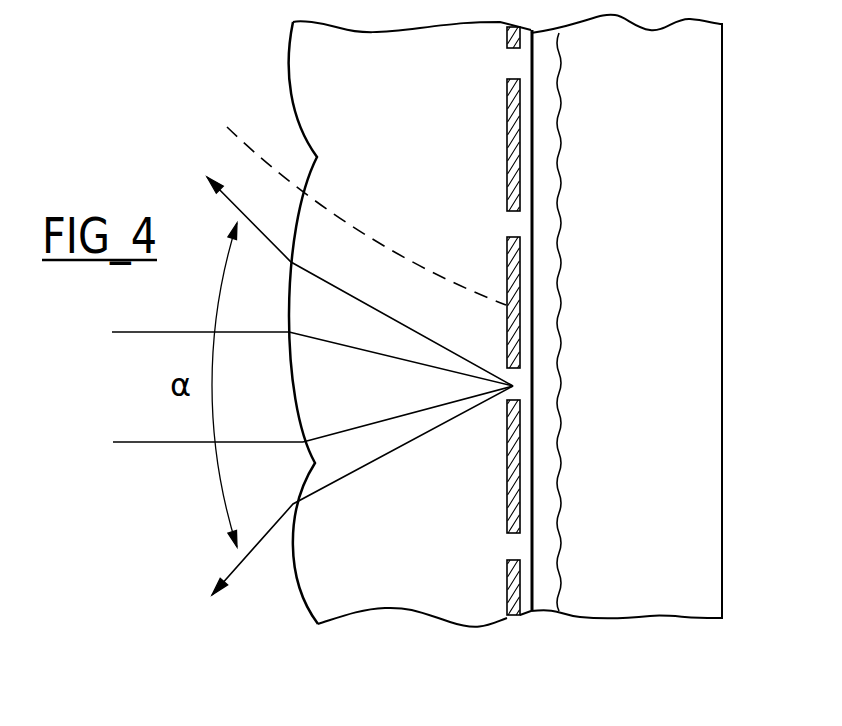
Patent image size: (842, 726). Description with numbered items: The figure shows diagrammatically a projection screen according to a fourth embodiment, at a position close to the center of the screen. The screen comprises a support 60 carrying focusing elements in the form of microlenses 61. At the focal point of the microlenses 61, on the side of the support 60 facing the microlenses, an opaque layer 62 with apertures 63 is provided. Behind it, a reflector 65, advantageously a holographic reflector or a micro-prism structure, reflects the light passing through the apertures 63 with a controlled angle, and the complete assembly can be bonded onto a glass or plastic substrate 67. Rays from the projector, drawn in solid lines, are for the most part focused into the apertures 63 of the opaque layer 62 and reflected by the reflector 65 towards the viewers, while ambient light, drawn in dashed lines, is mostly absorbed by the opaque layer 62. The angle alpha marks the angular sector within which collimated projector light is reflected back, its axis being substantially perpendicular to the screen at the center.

The support 60 is at (400, 600).
The microlenses 61 is at (292, 583).
The opaque layer 62 is at (510, 590).
The apertures 63 is at (520, 68).
The reflector 65 is at (548, 588).
The glass or plastic substrate 67 is at (700, 207).